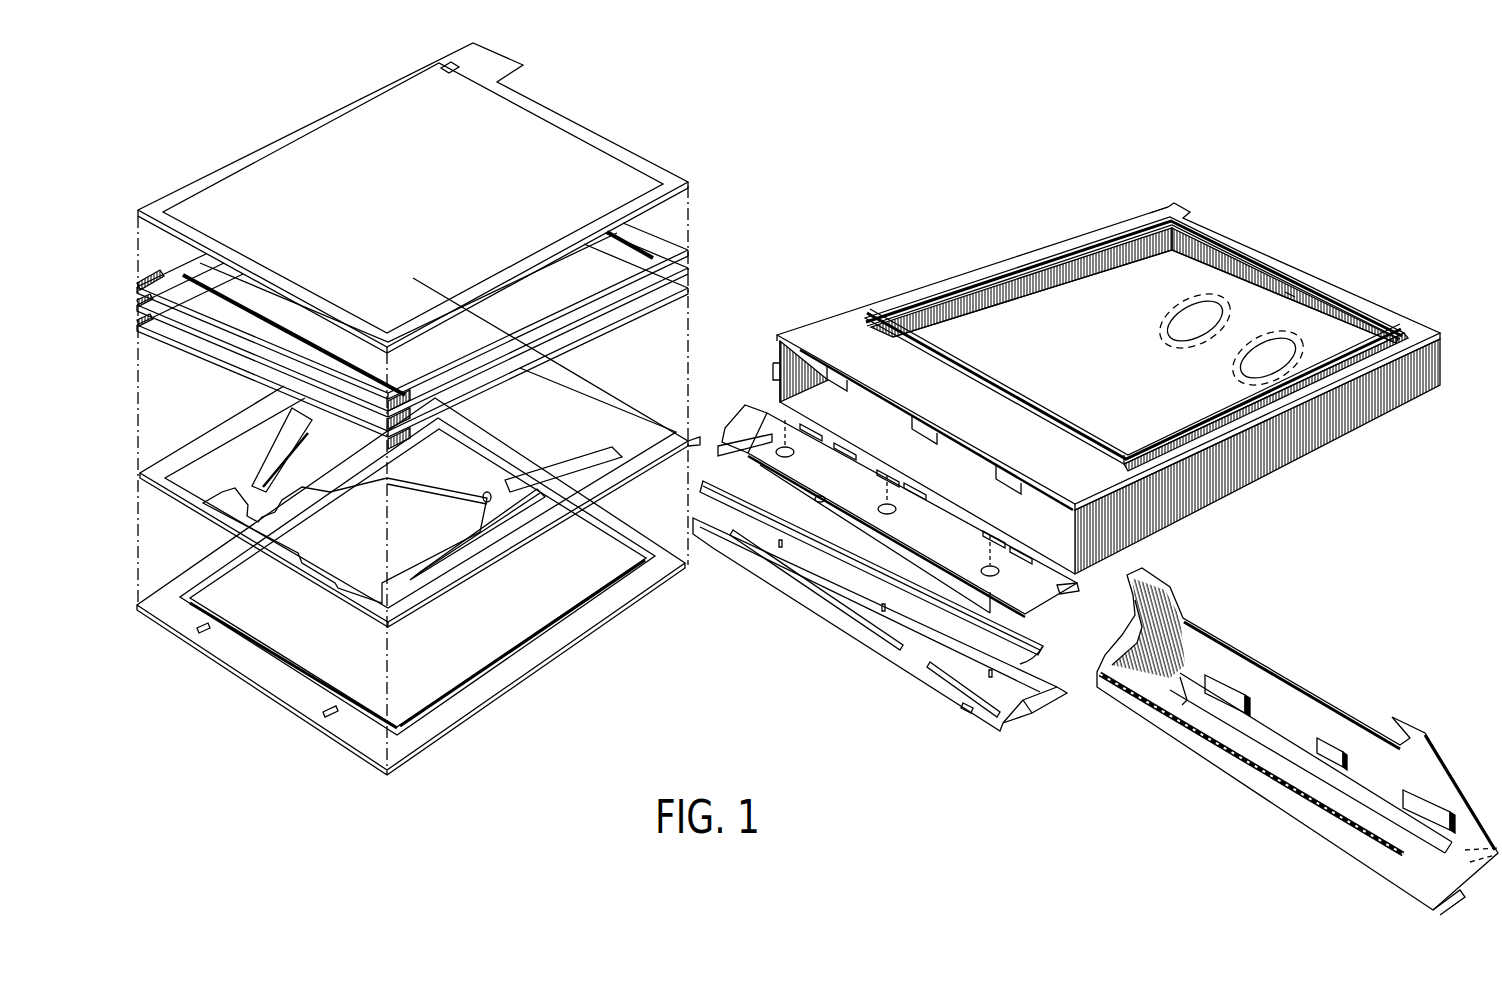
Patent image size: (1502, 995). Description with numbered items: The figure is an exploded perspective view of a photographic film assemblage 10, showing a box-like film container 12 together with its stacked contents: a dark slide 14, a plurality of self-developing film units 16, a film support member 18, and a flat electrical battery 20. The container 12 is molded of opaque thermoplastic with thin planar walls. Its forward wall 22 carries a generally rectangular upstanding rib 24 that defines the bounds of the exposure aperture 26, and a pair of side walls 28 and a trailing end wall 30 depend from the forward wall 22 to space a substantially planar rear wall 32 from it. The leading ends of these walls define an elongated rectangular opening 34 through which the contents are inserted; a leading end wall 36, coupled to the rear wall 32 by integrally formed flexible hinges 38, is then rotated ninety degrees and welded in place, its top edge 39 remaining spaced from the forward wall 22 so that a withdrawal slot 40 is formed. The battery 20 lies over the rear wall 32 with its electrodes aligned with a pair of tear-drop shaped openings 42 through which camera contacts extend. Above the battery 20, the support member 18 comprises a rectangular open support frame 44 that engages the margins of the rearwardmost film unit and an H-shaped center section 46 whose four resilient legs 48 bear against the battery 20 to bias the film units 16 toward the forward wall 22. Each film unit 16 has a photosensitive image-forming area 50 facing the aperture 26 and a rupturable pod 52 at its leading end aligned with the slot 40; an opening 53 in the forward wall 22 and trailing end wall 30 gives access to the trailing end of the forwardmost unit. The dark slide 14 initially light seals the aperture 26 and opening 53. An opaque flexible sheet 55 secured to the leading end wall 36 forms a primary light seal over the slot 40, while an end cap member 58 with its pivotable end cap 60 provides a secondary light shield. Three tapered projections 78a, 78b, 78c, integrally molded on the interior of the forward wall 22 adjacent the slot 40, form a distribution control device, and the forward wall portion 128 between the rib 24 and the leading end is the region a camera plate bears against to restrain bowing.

The photographic film assemblage 10 is at (904, 132).
The film container 12 is at (1066, 462).
The dark slide 14 is at (641, 152).
The self-developing film units 16 is at (432, 327).
The film support member 18 is at (429, 452).
The electrical battery 20 is at (607, 620).
The forward wall 22 is at (845, 311).
The upstanding rib 24 is at (946, 290).
The exposure aperture 26 is at (1062, 262).
The side wall 28 is at (778, 360).
The trailing end wall 30 is at (1290, 295).
The rear wall 32 is at (1117, 378).
The elongated rectangular opening 34 is at (936, 422).
The leading end wall 36 is at (1052, 590).
The flexible hinges 38 is at (897, 503).
The top edge 39 is at (821, 496).
The withdrawal slot 40 is at (1293, 742).
The tear-drop shaped openings 42 is at (1196, 318).
The support frame 44 is at (612, 405).
The center section 46 is at (462, 468).
The resilient legs 48 is at (557, 472).
The image-forming area 50 is at (620, 258).
The rupturable pod 52 is at (178, 283).
The opening 53 is at (1185, 205).
The opaque flexible sheet 55 is at (1030, 652).
The end cap member 58 is at (1050, 713).
The end cap 60 is at (888, 643).
The projection 78a is at (830, 375).
The projection 78b is at (925, 431).
The projection 78c is at (1022, 488).
The forward wall portion 128 is at (1086, 462).